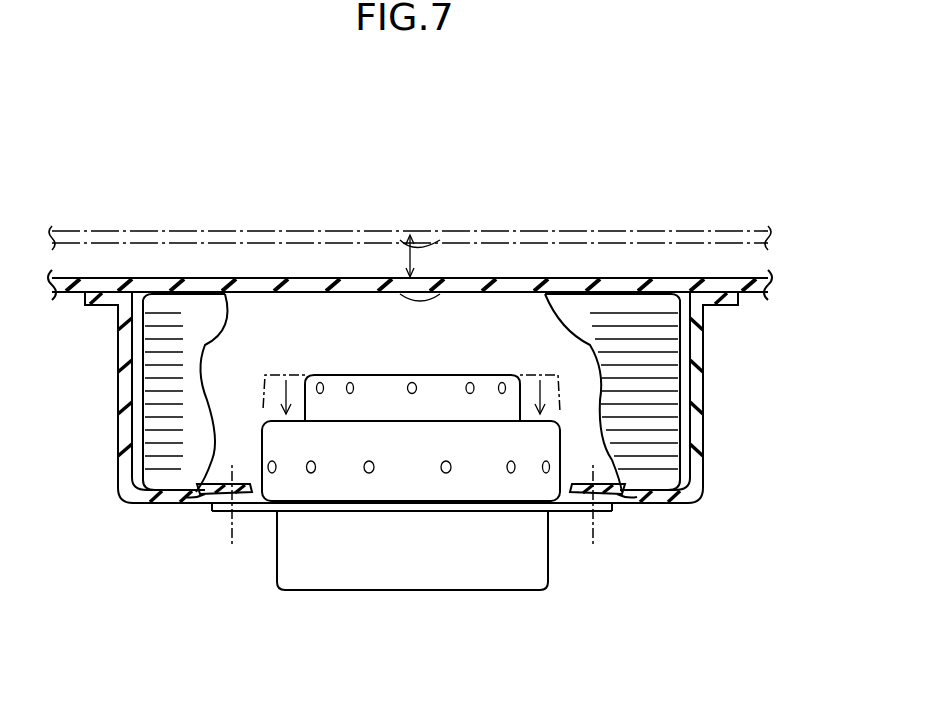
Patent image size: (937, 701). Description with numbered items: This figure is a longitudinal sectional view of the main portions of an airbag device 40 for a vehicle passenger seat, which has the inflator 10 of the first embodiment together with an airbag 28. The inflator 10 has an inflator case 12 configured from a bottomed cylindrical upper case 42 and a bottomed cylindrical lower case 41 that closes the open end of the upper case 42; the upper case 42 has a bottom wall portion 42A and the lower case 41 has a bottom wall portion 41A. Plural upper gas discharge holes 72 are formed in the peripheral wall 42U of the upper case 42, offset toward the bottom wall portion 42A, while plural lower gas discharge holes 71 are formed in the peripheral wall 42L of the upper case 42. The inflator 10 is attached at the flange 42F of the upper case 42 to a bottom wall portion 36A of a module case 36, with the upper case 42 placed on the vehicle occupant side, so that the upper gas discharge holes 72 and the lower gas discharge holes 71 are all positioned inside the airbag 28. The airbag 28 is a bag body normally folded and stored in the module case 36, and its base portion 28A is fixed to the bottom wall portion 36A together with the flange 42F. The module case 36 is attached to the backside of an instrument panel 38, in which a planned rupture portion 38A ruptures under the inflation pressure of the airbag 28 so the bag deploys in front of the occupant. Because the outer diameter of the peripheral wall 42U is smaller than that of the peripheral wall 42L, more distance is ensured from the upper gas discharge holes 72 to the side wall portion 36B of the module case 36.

The inflator 10 is at (297, 613).
The inflator case 12 is at (262, 548).
The airbag 28 is at (206, 314).
The base portion 28A is at (215, 492).
The module case 36 is at (711, 397).
The bottom wall portion 36A is at (665, 505).
The side wall portion 36B is at (700, 348).
The instrument panel 38 is at (585, 278).
The planned rupture portion 38A is at (432, 298).
The airbag device 40 is at (236, 135).
The lower case 41 is at (370, 592).
The bottom wall portion 41A is at (415, 590).
The upper case 42 is at (332, 374).
The bottom wall portion 42A is at (383, 374).
The flange 42F is at (561, 512).
The peripheral wall 42L is at (261, 444).
The peripheral wall 42U is at (527, 380).
The lower gas discharge holes 71 is at (445, 466).
The upper gas discharge holes 72 is at (414, 382).